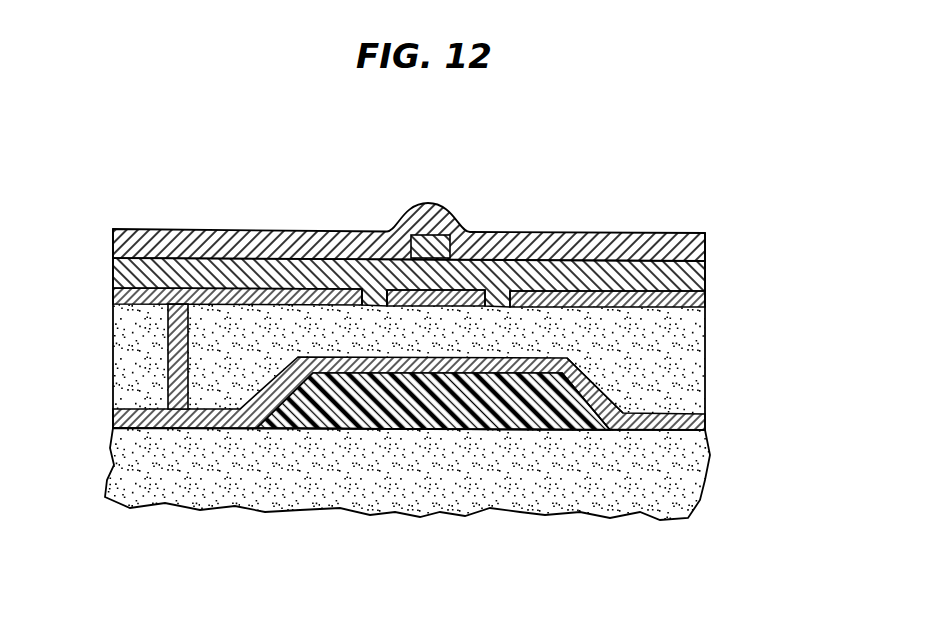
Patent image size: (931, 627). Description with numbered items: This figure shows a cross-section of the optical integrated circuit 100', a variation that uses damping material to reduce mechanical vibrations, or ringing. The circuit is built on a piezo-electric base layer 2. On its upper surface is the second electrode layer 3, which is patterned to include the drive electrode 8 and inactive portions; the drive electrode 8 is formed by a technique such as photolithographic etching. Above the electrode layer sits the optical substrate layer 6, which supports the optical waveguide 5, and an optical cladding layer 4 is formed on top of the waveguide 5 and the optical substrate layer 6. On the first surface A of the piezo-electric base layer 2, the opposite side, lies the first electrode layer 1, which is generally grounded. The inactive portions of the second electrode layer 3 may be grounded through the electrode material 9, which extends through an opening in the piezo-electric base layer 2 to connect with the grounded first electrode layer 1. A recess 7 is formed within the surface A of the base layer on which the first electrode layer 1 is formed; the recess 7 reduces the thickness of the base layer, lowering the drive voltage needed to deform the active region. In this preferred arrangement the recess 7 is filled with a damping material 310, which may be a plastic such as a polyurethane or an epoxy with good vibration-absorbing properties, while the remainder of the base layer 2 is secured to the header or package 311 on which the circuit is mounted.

The optical integrated circuit 100' is at (409, 275).
The drive electrode 8 is at (389, 304).
The optical waveguide 5 is at (442, 240).
The optical cladding layer 4 is at (705, 248).
The optical substrate layer 6 is at (705, 277).
The second electrode layer 3 is at (112, 290).
The electrode material 9 is at (168, 355).
The piezo-electric base layer 2 is at (705, 340).
The first electrode layer 1 is at (705, 420).
The first surface A is at (627, 407).
The damping material 310 is at (437, 409).
The header 311 is at (369, 477).
The recess 7 is at (522, 430).